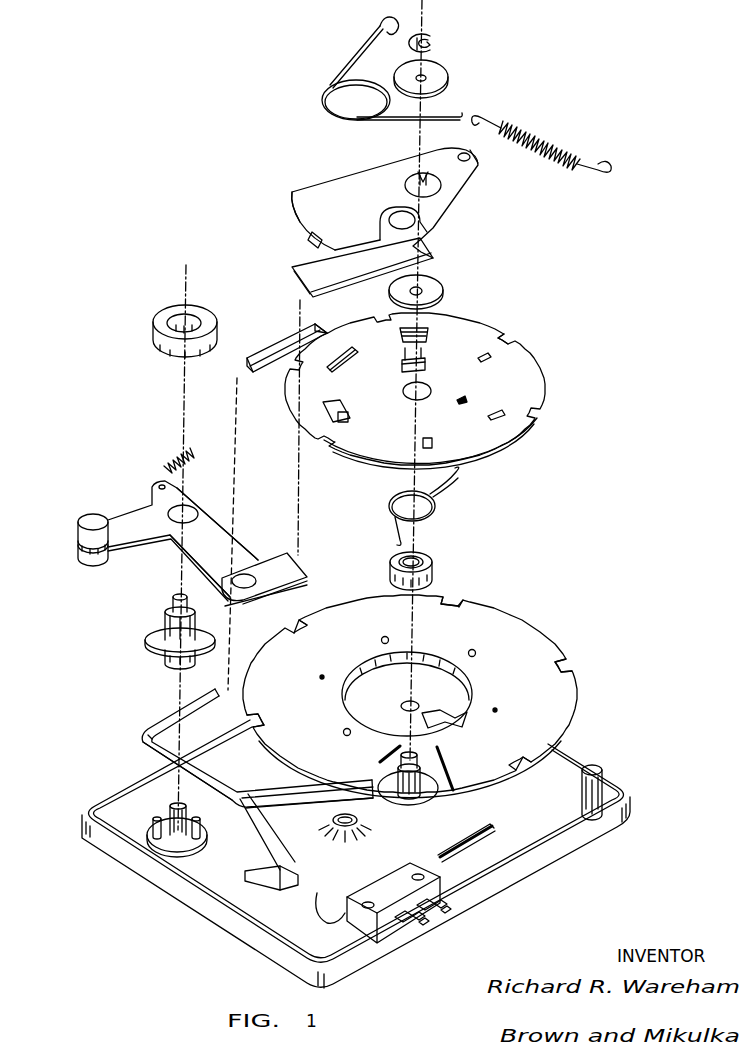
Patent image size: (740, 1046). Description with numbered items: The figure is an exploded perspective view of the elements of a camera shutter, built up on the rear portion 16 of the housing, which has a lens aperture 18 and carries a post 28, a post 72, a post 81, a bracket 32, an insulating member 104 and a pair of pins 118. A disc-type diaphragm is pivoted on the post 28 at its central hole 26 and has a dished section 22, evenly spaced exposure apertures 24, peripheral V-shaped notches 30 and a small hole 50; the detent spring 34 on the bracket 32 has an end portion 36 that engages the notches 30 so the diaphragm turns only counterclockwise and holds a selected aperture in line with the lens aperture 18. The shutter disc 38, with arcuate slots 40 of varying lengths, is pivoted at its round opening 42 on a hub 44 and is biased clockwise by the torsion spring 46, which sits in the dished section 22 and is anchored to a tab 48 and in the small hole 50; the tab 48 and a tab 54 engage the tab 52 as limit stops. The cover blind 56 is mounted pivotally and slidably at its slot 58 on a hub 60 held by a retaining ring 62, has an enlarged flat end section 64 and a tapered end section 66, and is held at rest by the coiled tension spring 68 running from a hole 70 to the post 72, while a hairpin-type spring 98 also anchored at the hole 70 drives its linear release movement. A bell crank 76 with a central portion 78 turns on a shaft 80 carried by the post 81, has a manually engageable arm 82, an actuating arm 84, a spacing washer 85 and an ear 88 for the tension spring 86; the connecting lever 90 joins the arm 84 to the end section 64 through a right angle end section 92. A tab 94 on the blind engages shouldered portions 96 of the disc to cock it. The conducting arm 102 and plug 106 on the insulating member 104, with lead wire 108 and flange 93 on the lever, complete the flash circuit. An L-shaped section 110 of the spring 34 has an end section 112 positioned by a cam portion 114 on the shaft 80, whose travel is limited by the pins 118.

The rear portion 16 is at (356, 854).
The lens aperture 18 is at (355, 816).
The dished section 22 is at (435, 690).
The exposure apertures 24 is at (469, 653).
The hole 26 is at (401, 705).
The post 28 is at (418, 804).
The V-shaped notches 30 is at (450, 602).
The bracket 32 is at (283, 858).
The detent spring 34 is at (214, 786).
The end portion 36 is at (308, 801).
The shutter disc 38 is at (445, 391).
The arcuate slots 40 is at (423, 446).
The round opening 42 is at (403, 393).
The hub 44 is at (434, 560).
The torsion spring 46 is at (435, 504).
The tab 48 is at (407, 360).
The small hole 50 is at (455, 670).
The tab 52 is at (450, 721).
The tab 54 is at (460, 398).
The cover blind 56 is at (381, 221).
The slot 58 is at (419, 175).
The hub 60 is at (436, 73).
The retaining ring 62 is at (425, 36).
The flat end section 64 is at (305, 202).
The tapered end section 66 is at (478, 159).
The coiled tension spring 68 is at (547, 144).
The hole 70 is at (463, 154).
The post 72 is at (594, 768).
The bell crank 76 is at (180, 541).
The central portion 78 is at (175, 495).
The shaft 80 is at (152, 630).
The post 81 is at (165, 803).
The manually engageable arm 82 is at (177, 526).
The actuating arm 84 is at (225, 545).
The spacing washer 85 is at (173, 308).
The tension spring 86 is at (210, 425).
The ear 88 is at (157, 487).
The connecting lever 90 is at (319, 272).
The right angle end section 92 is at (432, 227).
The flange 93 is at (423, 249).
The tab 94 is at (311, 245).
The shouldered portions 96 is at (515, 337).
The hairpin-type spring 98 is at (350, 59).
The conducting arm 102 is at (488, 830).
The insulating member 104 is at (392, 888).
The plug 106 is at (448, 914).
The lead wire 108 is at (331, 922).
The L-shaped section 110 is at (280, 345).
The end section 112 is at (314, 323).
The cam portion 114 is at (159, 663).
The pins 118 is at (202, 832).